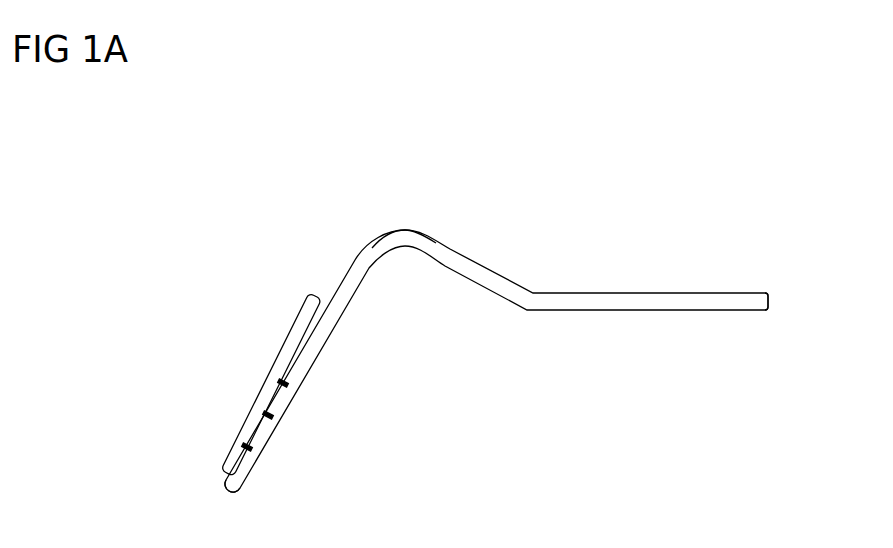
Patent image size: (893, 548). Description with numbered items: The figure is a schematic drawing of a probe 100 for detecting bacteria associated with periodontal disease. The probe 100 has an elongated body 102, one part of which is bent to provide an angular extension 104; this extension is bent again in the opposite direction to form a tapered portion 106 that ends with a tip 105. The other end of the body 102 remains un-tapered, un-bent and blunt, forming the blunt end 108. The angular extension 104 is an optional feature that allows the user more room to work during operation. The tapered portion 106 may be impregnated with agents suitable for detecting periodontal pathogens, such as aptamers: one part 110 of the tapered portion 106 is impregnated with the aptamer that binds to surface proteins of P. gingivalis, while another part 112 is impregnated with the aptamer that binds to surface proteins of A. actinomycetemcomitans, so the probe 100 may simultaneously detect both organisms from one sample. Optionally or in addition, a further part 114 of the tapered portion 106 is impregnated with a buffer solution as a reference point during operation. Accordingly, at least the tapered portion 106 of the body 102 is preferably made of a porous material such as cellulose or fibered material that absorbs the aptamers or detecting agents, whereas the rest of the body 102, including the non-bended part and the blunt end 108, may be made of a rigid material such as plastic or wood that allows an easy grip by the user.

The probe 100 is at (475, 142).
The elongated body 102 is at (714, 292).
The angular extension 104 is at (399, 231).
The tip 105 is at (222, 481).
The tapered portion 106 is at (271, 384).
The blunt end 108 is at (773, 313).
The part 110 is at (275, 421).
The part 112 is at (295, 390).
The part 114 is at (256, 452).